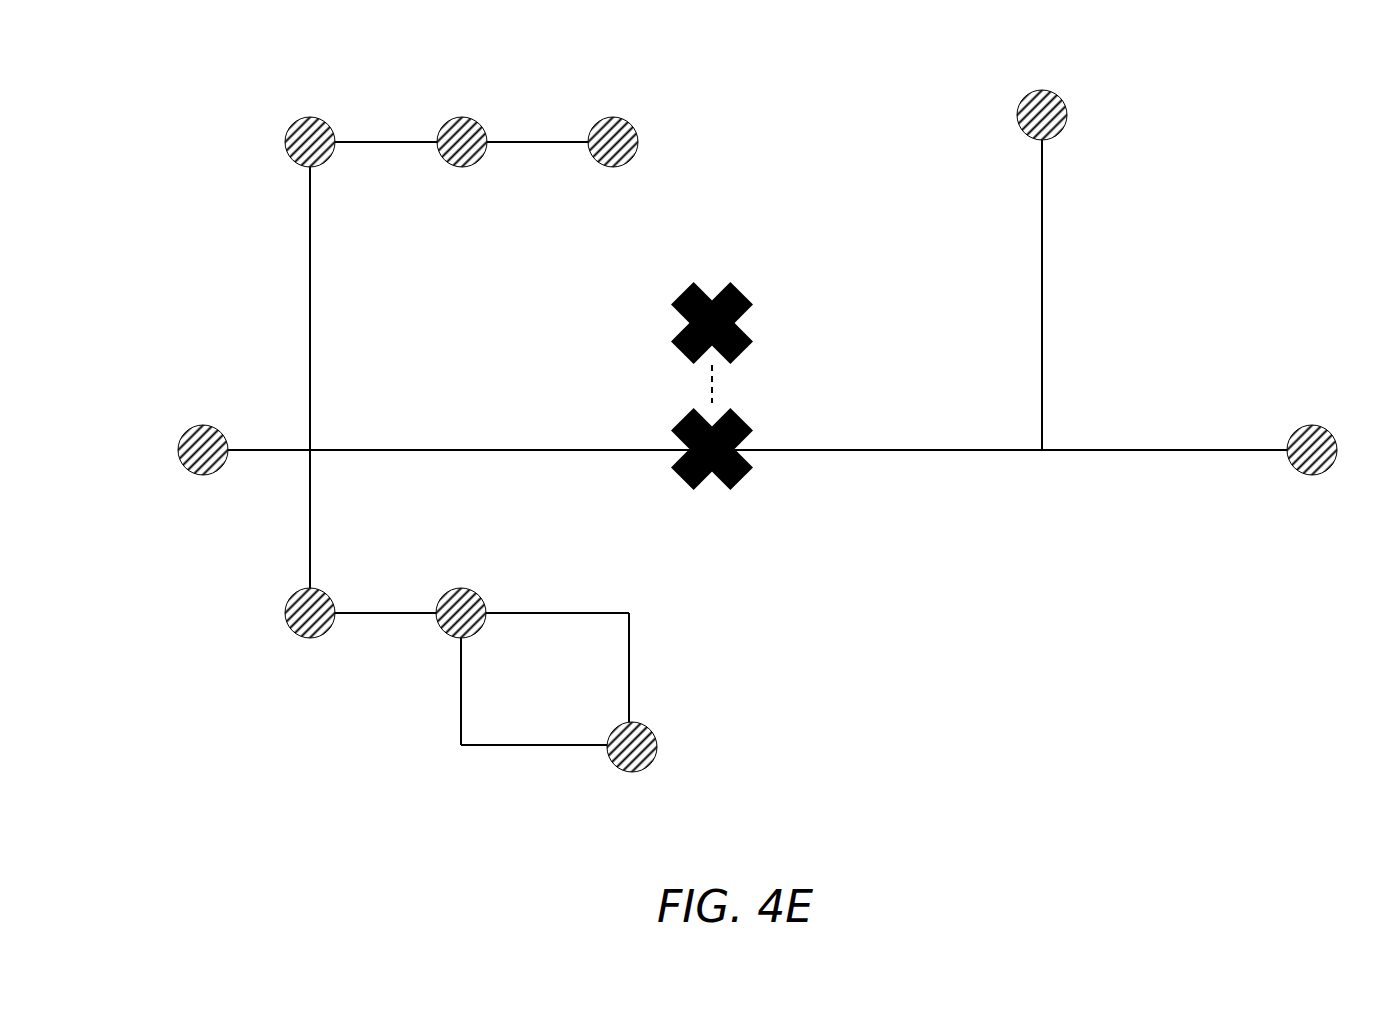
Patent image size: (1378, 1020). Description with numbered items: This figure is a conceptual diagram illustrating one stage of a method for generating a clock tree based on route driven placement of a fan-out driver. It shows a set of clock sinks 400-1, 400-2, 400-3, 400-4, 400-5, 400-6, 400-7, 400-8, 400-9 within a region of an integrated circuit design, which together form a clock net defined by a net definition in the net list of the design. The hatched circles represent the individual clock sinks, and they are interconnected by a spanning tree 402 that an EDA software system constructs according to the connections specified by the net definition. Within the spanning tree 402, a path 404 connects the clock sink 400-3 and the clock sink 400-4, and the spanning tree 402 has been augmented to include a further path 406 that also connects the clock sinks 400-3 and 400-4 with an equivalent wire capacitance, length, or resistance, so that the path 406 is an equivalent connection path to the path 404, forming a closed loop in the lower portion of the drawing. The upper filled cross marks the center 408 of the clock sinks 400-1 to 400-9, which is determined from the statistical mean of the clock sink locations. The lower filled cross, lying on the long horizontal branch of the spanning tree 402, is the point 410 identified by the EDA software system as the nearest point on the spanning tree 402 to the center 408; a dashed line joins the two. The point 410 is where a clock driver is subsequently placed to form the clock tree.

The spanning tree 402 is at (212, 104).
The clock sink 400-1 is at (213, 428).
The clock sink 400-2 is at (316, 590).
The clock sink 400-3 is at (465, 590).
The clock sink 400-4 is at (643, 725).
The clock sink 400-5 is at (325, 122).
The clock sink 400-6 is at (475, 120).
The clock sink 400-7 is at (628, 120).
The clock sink 400-8 is at (1048, 92).
The clock sink 400-9 is at (1318, 428).
The path 404 is at (461, 745).
The path 406 is at (629, 613).
The center of the clock sinks 408 is at (727, 282).
The point 410 is at (735, 410).